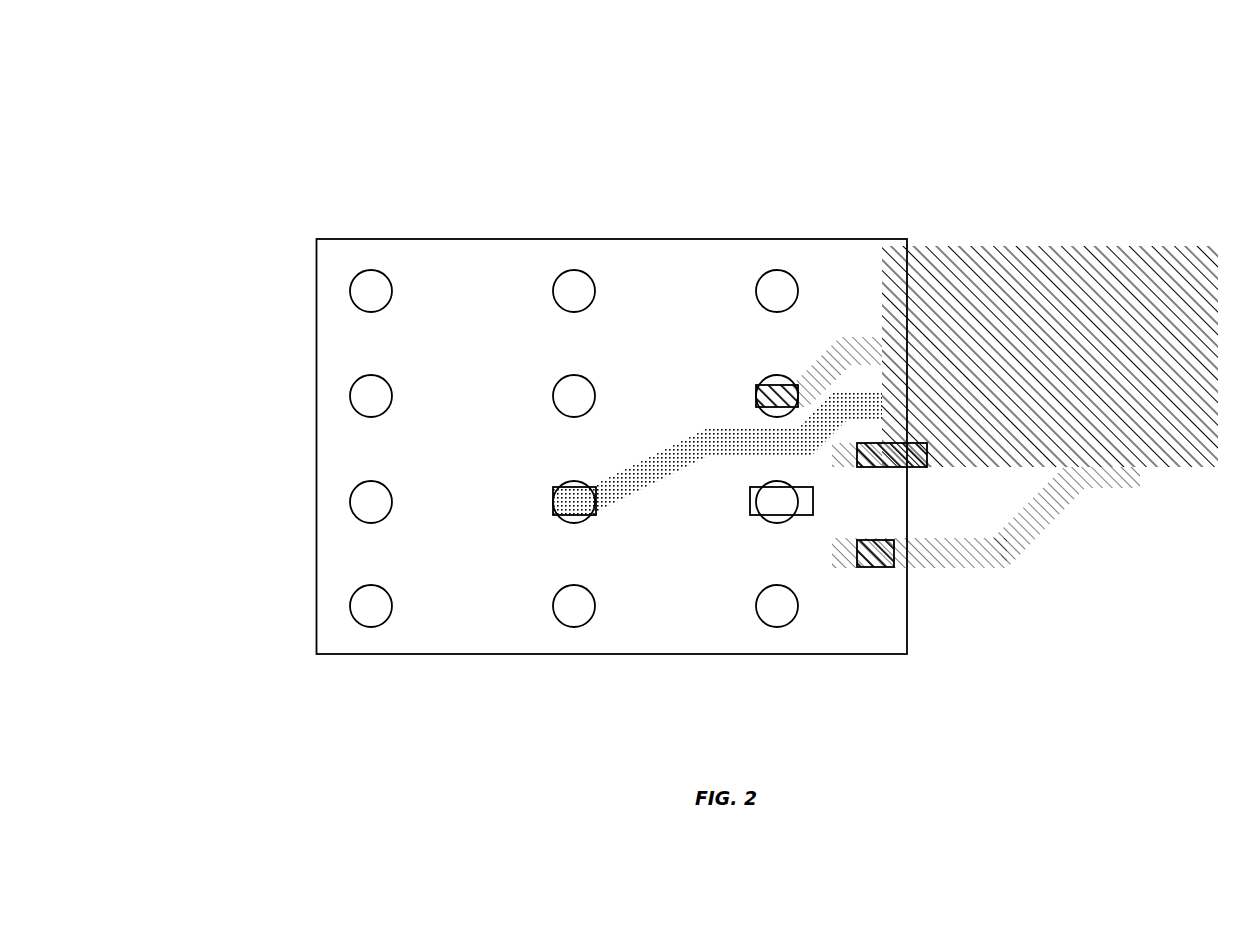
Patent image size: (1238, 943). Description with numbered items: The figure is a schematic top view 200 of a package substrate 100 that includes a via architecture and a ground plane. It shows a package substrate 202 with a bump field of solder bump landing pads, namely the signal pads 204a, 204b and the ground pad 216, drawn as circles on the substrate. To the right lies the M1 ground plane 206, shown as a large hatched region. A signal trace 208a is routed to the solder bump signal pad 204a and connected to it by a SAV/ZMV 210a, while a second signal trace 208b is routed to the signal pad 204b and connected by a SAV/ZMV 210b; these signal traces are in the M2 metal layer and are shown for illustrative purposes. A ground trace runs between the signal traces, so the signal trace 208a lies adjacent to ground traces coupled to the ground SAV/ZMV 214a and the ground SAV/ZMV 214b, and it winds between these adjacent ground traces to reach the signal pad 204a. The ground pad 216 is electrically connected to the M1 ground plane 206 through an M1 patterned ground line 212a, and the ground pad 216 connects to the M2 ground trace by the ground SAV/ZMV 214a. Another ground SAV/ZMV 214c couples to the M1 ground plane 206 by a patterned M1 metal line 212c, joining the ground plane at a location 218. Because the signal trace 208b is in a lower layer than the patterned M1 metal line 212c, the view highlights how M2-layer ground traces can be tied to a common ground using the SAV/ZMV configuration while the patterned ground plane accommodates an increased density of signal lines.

The package substrate 100 is at (268, 249).
The top view 200 is at (175, 41).
The package substrate 202 is at (364, 236).
The signal pad 204a is at (566, 479).
The signal pad 204b is at (761, 520).
The M1 ground plane 206 is at (1031, 343).
The signal trace 208a is at (619, 503).
The signal trace 208b is at (817, 520).
The SAV/ZMV 210a is at (558, 518).
The SAV/ZMV 210b is at (744, 501).
The M1 patterned ground line 212a is at (829, 343).
The patterned M1 metal line 212c is at (940, 570).
The ground SAV/ZMV 214a is at (752, 393).
The ground SAV/ZMV 214b is at (925, 471).
The ground SAV/ZMV 214c is at (881, 570).
The ground pad 216 is at (766, 375).
The location 218 is at (1129, 470).